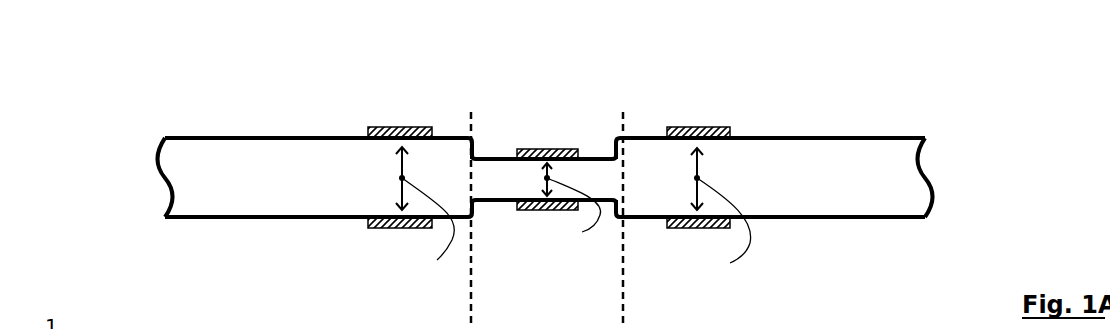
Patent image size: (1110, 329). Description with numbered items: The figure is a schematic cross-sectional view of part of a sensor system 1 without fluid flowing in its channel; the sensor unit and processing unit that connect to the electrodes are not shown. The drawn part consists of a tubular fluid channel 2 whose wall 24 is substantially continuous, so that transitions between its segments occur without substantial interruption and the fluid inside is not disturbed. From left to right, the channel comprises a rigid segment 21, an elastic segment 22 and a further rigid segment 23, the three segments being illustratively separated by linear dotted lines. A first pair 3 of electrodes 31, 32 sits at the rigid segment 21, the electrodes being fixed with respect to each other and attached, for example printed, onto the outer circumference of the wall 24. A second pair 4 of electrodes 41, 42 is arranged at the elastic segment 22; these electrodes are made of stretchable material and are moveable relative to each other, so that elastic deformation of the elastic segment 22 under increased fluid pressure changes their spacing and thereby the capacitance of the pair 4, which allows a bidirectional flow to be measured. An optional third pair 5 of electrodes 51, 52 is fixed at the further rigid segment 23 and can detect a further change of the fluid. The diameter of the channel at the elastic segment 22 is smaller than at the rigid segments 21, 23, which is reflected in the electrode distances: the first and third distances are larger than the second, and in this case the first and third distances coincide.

The sensor system 1 is at (113, 70).
The fluid channel 2 is at (183, 158).
The rigid segment 21 is at (263, 217).
The elastic segment 22 is at (492, 200).
The further rigid segment 23 is at (804, 217).
The wall 24 is at (837, 139).
The first pair of electrodes 3 is at (345, 33).
The electrode 31 is at (375, 221).
The electrode 32 is at (370, 128).
The second pair of electrodes 4 is at (525, 50).
The electrode 41 is at (527, 202).
The electrode 42 is at (520, 150).
The third pair of electrodes 5 is at (645, 30).
The electrode 51 is at (668, 228).
The electrode 52 is at (672, 129).